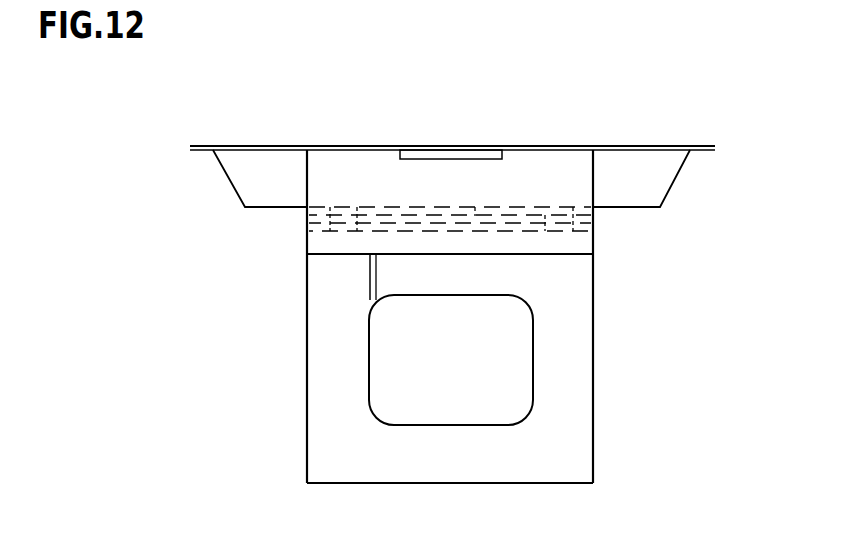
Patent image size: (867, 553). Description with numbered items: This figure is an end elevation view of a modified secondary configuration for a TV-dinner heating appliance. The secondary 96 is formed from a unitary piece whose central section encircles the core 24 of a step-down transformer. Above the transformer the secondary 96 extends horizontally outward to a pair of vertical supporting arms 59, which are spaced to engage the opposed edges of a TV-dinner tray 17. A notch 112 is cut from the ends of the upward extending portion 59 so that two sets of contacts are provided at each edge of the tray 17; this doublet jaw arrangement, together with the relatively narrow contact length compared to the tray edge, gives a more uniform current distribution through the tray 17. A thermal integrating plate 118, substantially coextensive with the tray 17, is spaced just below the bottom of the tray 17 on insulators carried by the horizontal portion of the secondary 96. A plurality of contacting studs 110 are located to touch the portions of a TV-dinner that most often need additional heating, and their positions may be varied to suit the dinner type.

The vertical supporting arms 59 is at (539, 162).
The notch 112 is at (434, 155).
The TV-dinner tray 17 is at (660, 188).
The thermal integrating plate 118 is at (474, 200).
The contacting studs 110 is at (305, 225).
The secondary 96 is at (333, 405).
The core 24 is at (518, 397).